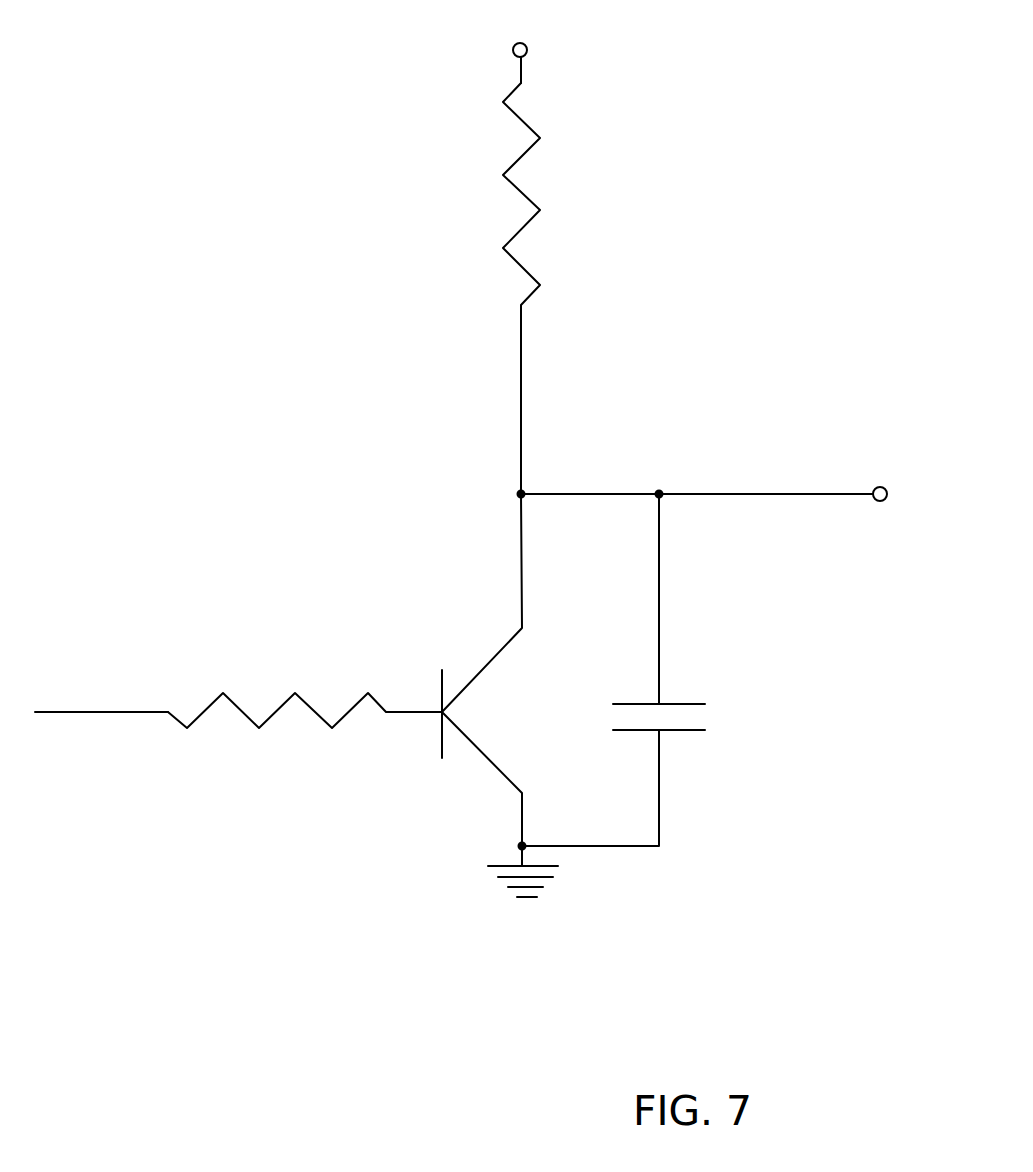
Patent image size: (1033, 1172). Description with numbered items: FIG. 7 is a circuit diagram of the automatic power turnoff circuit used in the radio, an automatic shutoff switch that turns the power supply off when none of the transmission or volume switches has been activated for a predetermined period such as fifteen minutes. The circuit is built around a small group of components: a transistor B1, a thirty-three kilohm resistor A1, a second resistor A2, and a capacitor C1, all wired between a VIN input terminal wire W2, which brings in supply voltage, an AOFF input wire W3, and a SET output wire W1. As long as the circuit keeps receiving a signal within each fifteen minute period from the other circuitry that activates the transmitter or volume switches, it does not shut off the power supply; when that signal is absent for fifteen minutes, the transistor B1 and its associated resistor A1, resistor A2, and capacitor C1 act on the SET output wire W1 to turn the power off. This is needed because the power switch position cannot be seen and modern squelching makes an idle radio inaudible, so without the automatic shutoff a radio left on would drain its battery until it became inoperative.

The VIN input terminal wire W2 is at (567, 42).
The resistor BM AC1206 A2 is at (575, 288).
The SET output wire W1 is at (703, 454).
The transistor MM8T2222A B1 is at (386, 695).
The capacitor .1 AC1206 C1 is at (672, 670).
The AOFF input wire W3 is at (101, 714).
The resistor 33K AC1206 A1 is at (305, 758).